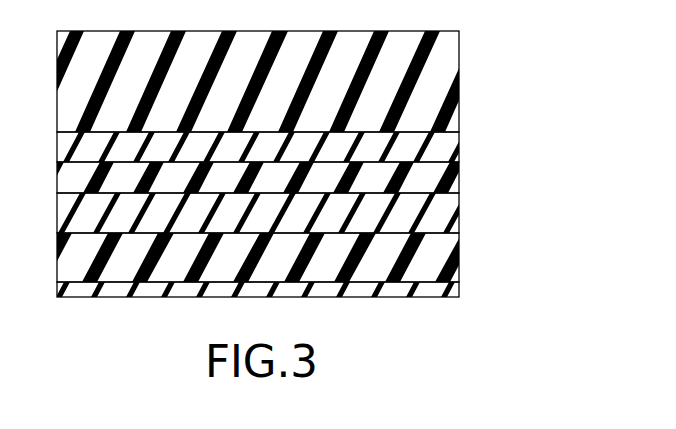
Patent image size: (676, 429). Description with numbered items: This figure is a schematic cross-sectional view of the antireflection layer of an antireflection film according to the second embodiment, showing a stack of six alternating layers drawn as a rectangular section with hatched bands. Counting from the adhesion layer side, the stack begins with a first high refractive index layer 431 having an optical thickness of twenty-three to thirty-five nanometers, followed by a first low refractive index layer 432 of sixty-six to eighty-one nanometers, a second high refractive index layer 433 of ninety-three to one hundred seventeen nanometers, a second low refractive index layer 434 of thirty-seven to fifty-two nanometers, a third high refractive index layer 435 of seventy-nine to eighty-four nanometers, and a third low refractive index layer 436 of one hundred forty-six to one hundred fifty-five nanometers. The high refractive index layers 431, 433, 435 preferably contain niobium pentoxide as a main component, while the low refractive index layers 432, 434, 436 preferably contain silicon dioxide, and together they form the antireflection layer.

The first high refractive index layer 431 is at (459, 285).
The first low refractive index layer 432 is at (459, 255).
The second high refractive index layer 433 is at (459, 210).
The second low refractive index layer 434 is at (459, 173).
The third high refractive index layer 435 is at (459, 145).
The third low refractive index layer 436 is at (459, 82).